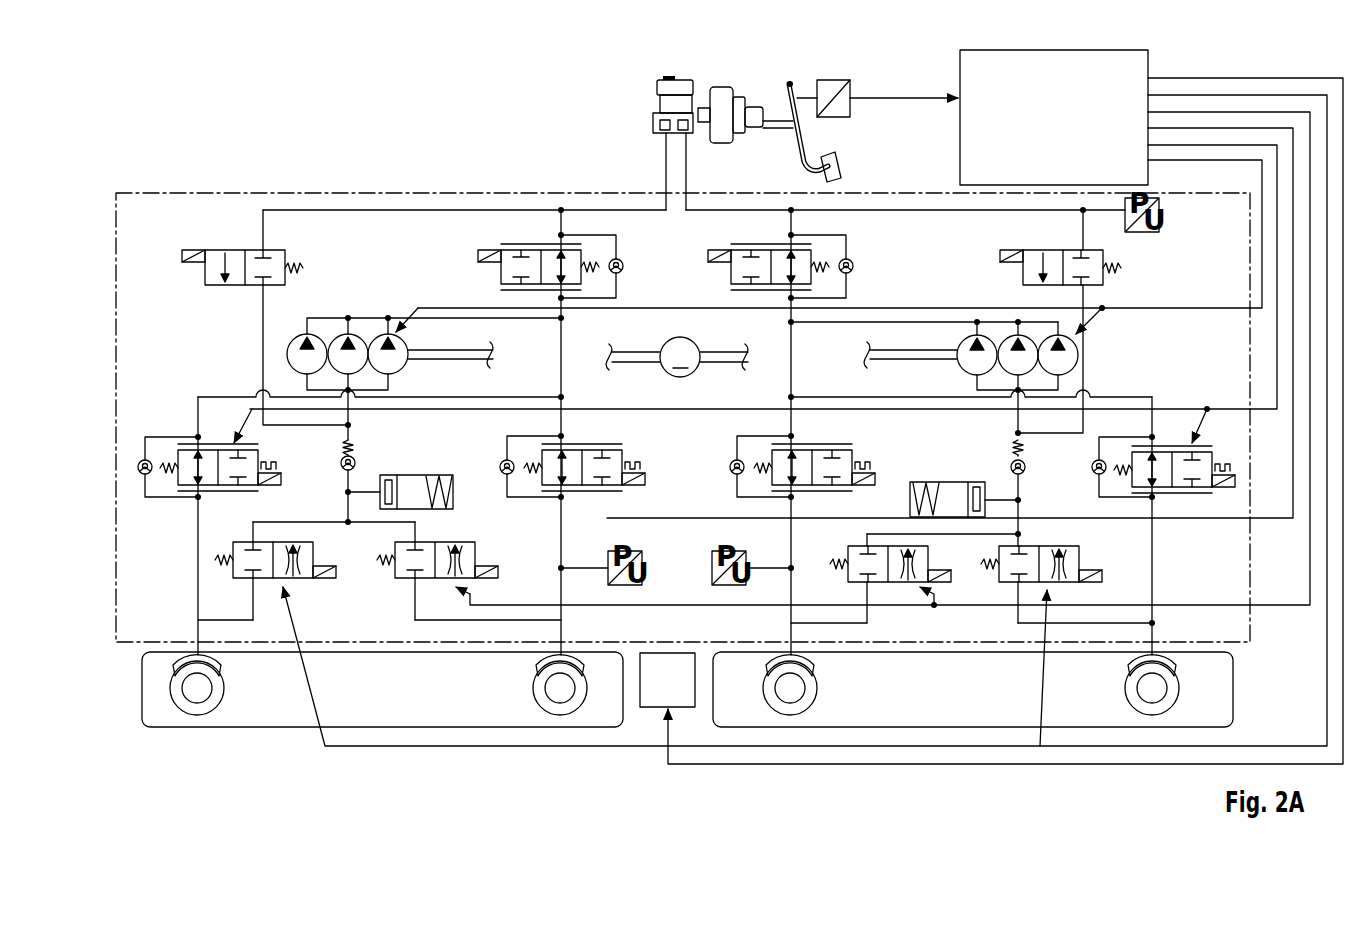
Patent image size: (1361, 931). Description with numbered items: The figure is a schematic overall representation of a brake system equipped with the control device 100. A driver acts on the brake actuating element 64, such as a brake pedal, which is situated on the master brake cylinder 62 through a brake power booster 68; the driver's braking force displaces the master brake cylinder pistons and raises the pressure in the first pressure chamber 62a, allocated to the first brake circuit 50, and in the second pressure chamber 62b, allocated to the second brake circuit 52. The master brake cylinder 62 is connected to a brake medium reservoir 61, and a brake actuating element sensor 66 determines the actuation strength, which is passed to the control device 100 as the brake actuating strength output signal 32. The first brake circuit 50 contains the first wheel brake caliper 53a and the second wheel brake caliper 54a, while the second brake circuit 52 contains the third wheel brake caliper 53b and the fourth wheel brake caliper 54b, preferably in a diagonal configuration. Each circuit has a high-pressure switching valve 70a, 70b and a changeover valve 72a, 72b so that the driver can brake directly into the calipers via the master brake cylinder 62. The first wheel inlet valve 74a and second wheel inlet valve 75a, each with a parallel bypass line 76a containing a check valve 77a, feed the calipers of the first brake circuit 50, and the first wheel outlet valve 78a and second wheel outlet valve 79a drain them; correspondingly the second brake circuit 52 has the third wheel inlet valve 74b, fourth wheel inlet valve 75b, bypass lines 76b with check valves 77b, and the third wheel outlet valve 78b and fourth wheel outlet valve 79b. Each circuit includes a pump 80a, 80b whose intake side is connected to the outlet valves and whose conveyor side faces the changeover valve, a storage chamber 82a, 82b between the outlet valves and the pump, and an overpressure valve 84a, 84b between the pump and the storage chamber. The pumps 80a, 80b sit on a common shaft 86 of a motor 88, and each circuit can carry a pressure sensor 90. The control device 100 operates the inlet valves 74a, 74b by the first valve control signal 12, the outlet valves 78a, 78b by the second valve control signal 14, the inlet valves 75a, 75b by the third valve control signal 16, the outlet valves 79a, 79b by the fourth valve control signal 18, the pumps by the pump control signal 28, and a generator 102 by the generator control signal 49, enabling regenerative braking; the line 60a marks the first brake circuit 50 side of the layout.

The first valve control signal 12 is at (1196, 126).
The second valve control signal 14 is at (1230, 110).
The third valve control signal 16 is at (1224, 162).
The fourth valve control signal 18 is at (1265, 92).
The pump control signal 28 is at (1184, 162).
The brake actuating strength output signal 32 is at (893, 97).
The generator control signal 49 is at (1282, 78).
The first brake circuit 50 is at (858, 770).
The second brake circuit 52 is at (504, 752).
The first wheel brake caliper 53a is at (805, 666).
The third wheel brake caliper 53b is at (546, 666).
The second wheel brake caliper 54a is at (1134, 666).
The fourth wheel brake caliper 54b is at (211, 666).
The brake circuit 60a is at (793, 322).
The brake medium reservoir 61 is at (681, 82).
The master brake cylinder 62 is at (652, 136).
The first pressure chamber 62a is at (700, 116).
The second pressure chamber 62b is at (654, 128).
The brake actuating element 64 is at (808, 128).
The brake actuating element sensor 66 is at (834, 80).
The brake power booster 68 is at (740, 146).
The high-pressure switching valve 70a is at (1030, 250).
The high-pressure switching valve 70b is at (284, 255).
The changeover valve 72a is at (732, 244).
The changeover valve 72b is at (502, 244).
The first wheel inlet valve 74a is at (825, 444).
The third wheel inlet valve 74b is at (600, 444).
The second wheel inlet valve 75a is at (1193, 494).
The fourth wheel inlet valve 75b is at (218, 487).
The bypass line 76a is at (738, 496).
The bypass line 76b is at (152, 500).
The check valve 77a is at (730, 463).
The check valve 77b is at (144, 458).
The first wheel outlet valve 78a is at (897, 585).
The third wheel outlet valve 78b is at (396, 549).
The second wheel outlet valve 79a is at (1078, 556).
The fourth wheel outlet valve 79b is at (308, 583).
The pump 80a is at (958, 366).
The pump 80b is at (408, 362).
The storage chamber 82a is at (922, 482).
The storage chamber 82b is at (446, 475).
The overpressure valve 84a is at (1010, 466).
The overpressure valve 84b is at (355, 460).
The common shaft 86 is at (716, 362).
The motor 88 is at (672, 372).
The pressure sensor 90 is at (613, 552).
The control device 100 is at (960, 144).
The generator 102 is at (644, 708).